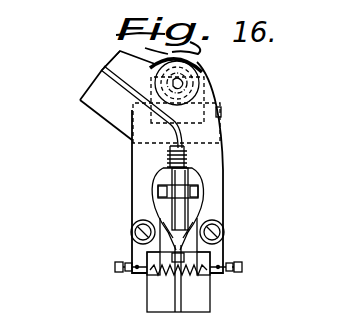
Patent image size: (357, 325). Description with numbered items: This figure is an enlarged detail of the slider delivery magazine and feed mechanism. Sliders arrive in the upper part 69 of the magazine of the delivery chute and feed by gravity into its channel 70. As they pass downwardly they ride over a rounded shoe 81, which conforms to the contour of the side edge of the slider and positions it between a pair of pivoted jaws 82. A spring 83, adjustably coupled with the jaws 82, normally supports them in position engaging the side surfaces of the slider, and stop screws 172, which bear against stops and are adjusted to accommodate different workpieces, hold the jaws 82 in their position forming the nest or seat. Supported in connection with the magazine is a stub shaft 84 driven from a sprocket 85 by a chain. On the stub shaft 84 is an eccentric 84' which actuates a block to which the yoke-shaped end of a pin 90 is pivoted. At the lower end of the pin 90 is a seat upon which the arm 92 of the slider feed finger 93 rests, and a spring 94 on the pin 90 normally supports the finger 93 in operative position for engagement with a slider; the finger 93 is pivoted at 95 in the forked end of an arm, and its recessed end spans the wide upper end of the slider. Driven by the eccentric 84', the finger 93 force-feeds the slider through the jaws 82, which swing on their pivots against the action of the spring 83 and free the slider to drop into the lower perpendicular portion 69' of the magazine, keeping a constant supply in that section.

The upper part of the magazine 69 is at (87, 95).
The channel 70 is at (122, 88).
The rounded shoe 81 is at (152, 135).
The stub shaft 84 is at (135, 59).
The eccentric 84' is at (208, 83).
The sprocket 85 is at (203, 106).
The pin 90 is at (166, 172).
The spring 94 is at (192, 172).
The pivot 95 is at (160, 192).
The arm 92 is at (198, 192).
The slider feed finger 93 is at (180, 215).
The pivoted jaws 82 is at (163, 214).
The spring 83 is at (160, 273).
The lower perpendicular portion of the magazine 69' is at (208, 278).
The stop screws 172 is at (114, 267).